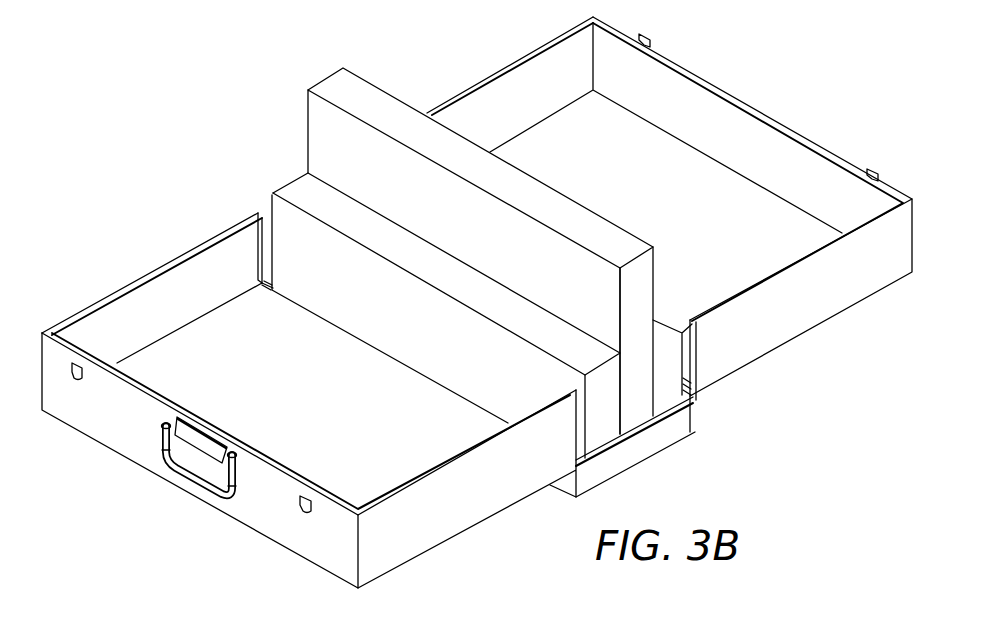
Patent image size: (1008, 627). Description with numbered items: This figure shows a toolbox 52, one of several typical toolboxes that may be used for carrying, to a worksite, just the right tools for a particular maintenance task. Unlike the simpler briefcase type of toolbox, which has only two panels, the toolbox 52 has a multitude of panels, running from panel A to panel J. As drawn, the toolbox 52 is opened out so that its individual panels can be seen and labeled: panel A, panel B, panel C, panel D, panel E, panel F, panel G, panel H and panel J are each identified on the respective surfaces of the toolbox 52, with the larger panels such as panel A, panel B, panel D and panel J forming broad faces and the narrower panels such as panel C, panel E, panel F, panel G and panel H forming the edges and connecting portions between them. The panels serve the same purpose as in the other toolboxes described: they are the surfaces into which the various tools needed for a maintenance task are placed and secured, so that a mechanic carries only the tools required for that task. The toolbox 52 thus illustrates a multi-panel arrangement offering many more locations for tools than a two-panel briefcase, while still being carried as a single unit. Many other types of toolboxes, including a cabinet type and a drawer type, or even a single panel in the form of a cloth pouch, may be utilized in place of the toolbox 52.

The toolbox 52 is at (135, 231).
The panel A is at (311, 363).
The panel B is at (428, 325).
The panel C is at (300, 193).
The panel D is at (464, 262).
The panel E is at (330, 82).
The panel F is at (659, 297).
The panel G is at (673, 343).
The panel H is at (690, 384).
The panel J is at (667, 172).